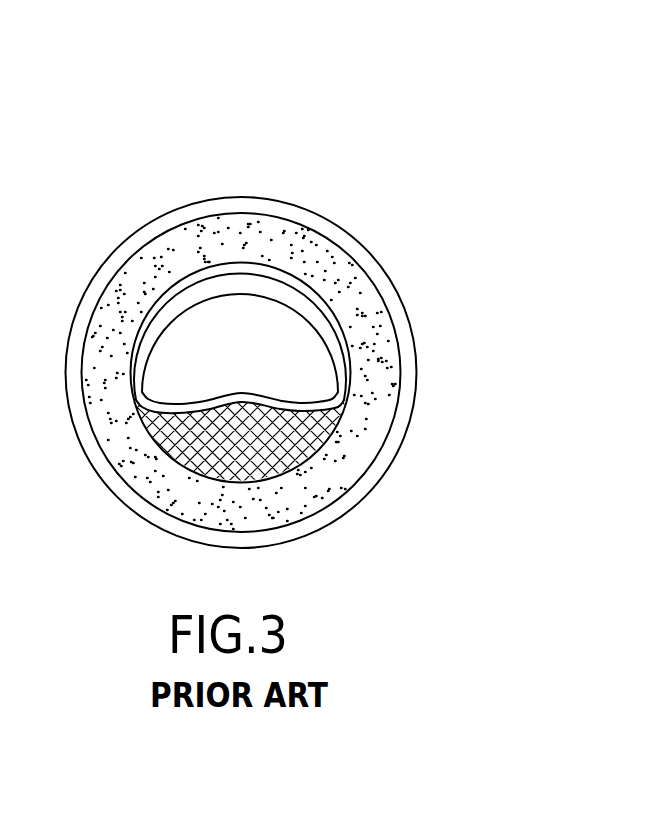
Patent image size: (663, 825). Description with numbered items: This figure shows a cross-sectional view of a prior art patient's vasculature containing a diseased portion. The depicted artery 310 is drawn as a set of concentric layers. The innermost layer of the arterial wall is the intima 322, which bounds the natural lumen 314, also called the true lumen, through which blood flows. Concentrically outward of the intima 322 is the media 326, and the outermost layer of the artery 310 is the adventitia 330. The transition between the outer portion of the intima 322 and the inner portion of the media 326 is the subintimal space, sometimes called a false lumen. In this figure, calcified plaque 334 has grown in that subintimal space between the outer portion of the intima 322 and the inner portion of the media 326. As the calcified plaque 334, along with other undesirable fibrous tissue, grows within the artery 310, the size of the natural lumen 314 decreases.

The artery 310 is at (210, 163).
The natural lumen 314 is at (177, 327).
The intima 322 is at (298, 283).
The media 326 is at (360, 286).
The adventitia 330 is at (410, 357).
The calcified plaque 334 is at (314, 431).